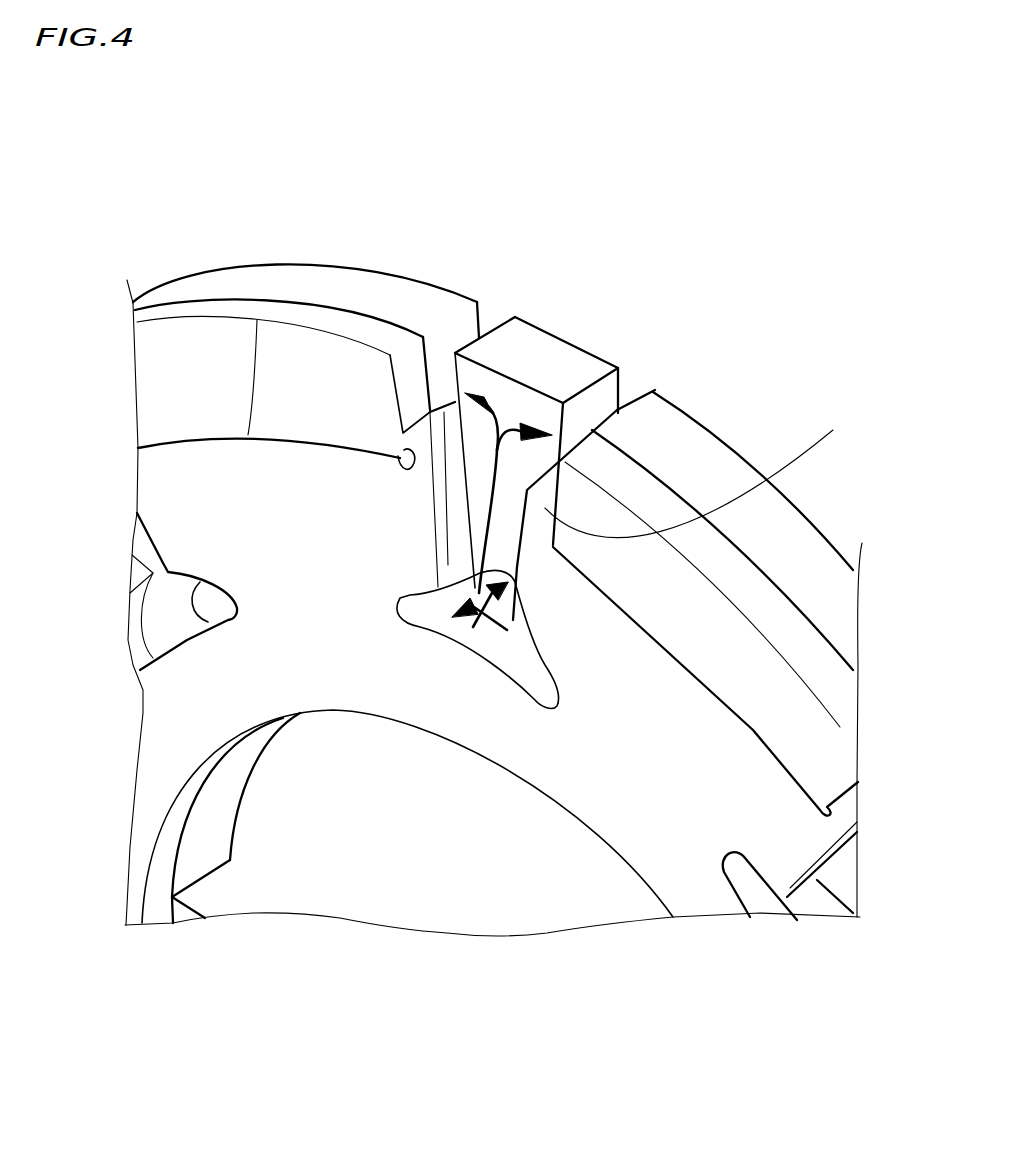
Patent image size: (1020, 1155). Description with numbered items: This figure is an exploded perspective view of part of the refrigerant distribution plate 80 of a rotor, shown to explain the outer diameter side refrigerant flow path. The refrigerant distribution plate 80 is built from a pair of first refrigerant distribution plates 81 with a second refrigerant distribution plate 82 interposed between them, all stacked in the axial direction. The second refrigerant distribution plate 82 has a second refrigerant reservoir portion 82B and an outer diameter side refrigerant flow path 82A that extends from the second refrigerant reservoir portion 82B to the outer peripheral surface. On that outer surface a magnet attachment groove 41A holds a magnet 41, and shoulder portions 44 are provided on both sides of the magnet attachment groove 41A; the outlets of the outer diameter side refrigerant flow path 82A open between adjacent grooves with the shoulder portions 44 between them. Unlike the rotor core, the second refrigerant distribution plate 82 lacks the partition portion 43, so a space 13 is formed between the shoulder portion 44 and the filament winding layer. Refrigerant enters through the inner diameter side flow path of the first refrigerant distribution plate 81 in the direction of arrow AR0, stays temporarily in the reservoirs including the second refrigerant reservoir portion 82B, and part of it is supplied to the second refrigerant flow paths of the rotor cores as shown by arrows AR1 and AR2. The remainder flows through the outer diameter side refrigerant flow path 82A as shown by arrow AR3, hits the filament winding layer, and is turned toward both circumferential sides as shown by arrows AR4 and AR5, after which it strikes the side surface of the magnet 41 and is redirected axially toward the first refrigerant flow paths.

The space 13 is at (440, 347).
The magnet 41 is at (183, 312).
The magnet attachment groove 41A is at (257, 340).
The partition portion 43 is at (552, 350).
The shoulder portion 44 is at (412, 447).
The refrigerant distribution plate 80 is at (455, 245).
The first refrigerant distribution plate 81 is at (570, 338).
The second refrigerant distribution plate 82 is at (190, 504).
The outer diameter side refrigerant flow path 82A is at (470, 493).
The second refrigerant reservoir portion 82B is at (493, 635).
The arrow AR0 is at (500, 640).
The arrow AR1 is at (473, 623).
The arrow AR2 is at (538, 588).
The arrow AR3 is at (540, 573).
The arrow AR4 is at (508, 385).
The arrow AR5 is at (622, 373).